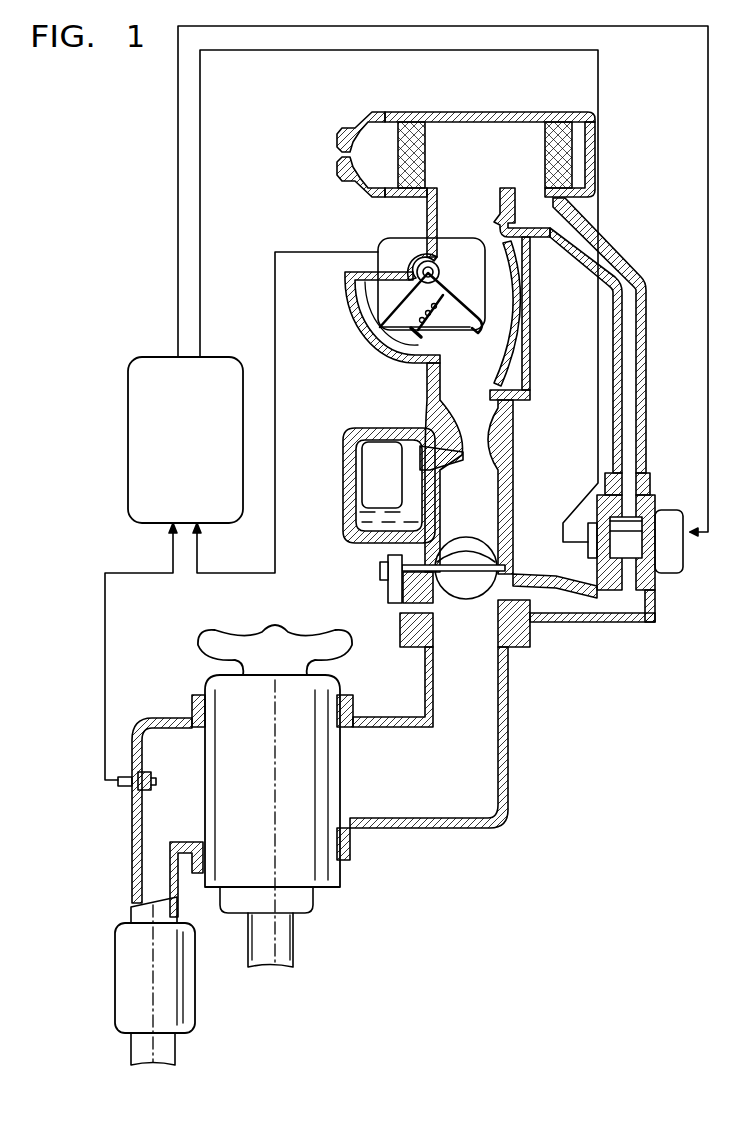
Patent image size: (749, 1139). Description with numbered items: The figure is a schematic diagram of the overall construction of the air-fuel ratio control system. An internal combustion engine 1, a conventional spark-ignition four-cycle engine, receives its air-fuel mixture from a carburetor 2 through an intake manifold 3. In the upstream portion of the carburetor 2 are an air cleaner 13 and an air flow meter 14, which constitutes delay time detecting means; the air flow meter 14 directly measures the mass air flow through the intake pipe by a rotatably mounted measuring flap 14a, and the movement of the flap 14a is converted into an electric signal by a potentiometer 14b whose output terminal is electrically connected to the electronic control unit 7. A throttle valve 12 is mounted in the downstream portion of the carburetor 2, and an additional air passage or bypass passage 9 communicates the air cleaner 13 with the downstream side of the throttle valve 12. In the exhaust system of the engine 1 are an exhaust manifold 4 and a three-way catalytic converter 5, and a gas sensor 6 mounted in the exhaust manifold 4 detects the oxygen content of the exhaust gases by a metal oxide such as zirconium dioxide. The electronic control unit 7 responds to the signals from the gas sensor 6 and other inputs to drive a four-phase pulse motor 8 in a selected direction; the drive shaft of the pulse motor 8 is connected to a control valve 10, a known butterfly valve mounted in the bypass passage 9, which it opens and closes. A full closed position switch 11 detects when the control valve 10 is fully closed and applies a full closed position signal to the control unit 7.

The internal combustion engine 1 is at (337, 878).
The carburetor 2 is at (401, 428).
The intake manifold 3 is at (425, 828).
The exhaust manifold 4 is at (132, 842).
The three-way catalytic converter 5 is at (115, 968).
The gas sensor 6 is at (121, 785).
The electronic control unit 7 is at (128, 452).
The four-phase pulse motor 8 is at (662, 575).
The additional air passage (bypass passage) 9 is at (648, 406).
The control valve 10 is at (625, 560).
The full closed position switch 11 is at (588, 552).
The throttle valve 12 is at (468, 582).
The air cleaner 13 is at (526, 132).
The air flow meter 14 is at (345, 302).
The measuring flap 14a is at (479, 320).
The potentiometer 14b is at (400, 243).